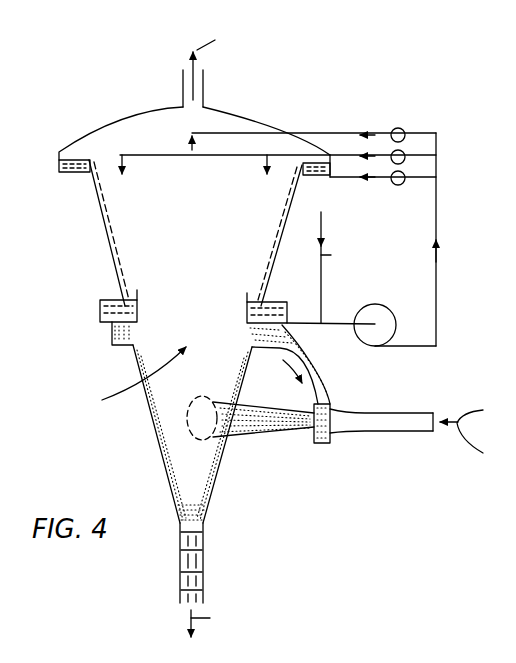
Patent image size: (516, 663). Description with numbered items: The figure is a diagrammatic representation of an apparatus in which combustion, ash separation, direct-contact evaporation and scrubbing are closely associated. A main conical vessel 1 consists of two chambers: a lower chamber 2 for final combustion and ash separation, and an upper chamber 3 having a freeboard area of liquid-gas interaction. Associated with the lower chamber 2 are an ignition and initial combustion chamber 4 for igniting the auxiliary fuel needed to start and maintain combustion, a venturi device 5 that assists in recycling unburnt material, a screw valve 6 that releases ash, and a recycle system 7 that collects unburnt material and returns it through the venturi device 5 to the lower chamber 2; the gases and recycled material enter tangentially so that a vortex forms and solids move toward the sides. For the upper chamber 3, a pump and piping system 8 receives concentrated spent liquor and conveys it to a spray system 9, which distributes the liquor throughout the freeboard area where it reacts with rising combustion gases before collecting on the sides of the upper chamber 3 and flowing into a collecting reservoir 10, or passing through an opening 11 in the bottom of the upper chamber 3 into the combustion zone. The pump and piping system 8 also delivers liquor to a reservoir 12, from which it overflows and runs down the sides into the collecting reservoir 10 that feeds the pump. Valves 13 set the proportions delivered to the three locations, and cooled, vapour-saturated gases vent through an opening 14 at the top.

The main conical vessel 1 is at (196, 244).
The lower chamber 2 is at (174, 450).
The upper chamber 3 is at (128, 232).
The ignition and initial combustion chamber 4 is at (405, 434).
The venturi device 5 is at (306, 432).
The screw valve 6 is at (204, 560).
The recycle system 7 is at (112, 340).
The pump and piping system 8 is at (433, 286).
The spray system 9 is at (192, 133).
The collecting reservoir 10 is at (100, 303).
The opening 11 is at (132, 381).
The reservoir 12 is at (80, 172).
The valves 13 is at (394, 171).
The opening 14 is at (205, 94).